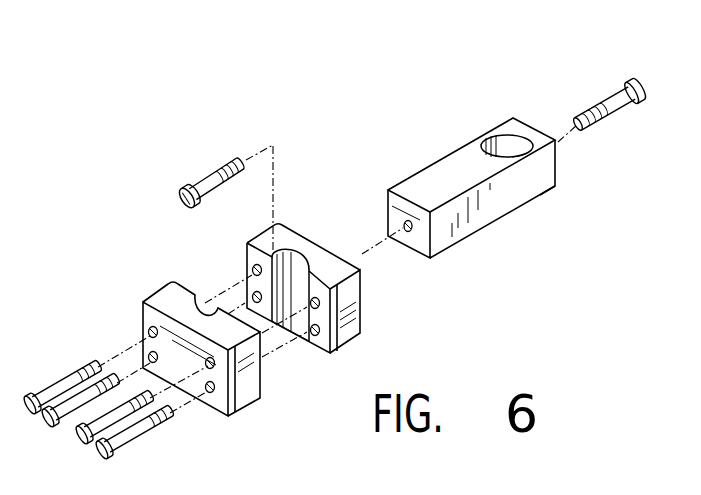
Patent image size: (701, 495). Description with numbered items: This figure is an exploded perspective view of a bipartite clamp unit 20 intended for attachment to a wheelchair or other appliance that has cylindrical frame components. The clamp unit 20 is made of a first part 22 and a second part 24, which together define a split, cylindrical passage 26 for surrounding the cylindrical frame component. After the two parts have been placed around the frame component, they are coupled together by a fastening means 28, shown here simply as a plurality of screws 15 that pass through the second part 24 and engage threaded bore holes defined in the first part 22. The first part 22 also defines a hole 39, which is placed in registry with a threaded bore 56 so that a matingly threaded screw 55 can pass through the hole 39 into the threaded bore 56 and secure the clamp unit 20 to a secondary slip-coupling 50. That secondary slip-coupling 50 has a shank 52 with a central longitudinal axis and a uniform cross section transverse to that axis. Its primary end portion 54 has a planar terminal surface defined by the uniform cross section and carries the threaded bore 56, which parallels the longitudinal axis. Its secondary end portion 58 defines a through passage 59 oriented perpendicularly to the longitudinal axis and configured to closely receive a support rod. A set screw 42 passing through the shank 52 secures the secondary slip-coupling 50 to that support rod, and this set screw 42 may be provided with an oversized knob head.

The screws 15 is at (134, 434).
The bipartite clamp unit 20 is at (141, 291).
The first part 22 is at (337, 268).
The second part 24 is at (181, 303).
The split cylindrical passage 26 is at (287, 335).
The fastening means 28 is at (79, 361).
The hole 39 is at (292, 277).
The set screw 42 is at (621, 111).
The secondary slip-coupling 50 is at (480, 97).
The shank 52 is at (527, 210).
The primary end portion 54 is at (407, 250).
The screw 55 is at (203, 173).
The threaded bore 56 is at (471, 156).
The secondary end portion 58 is at (557, 190).
The through passage 59 is at (507, 146).